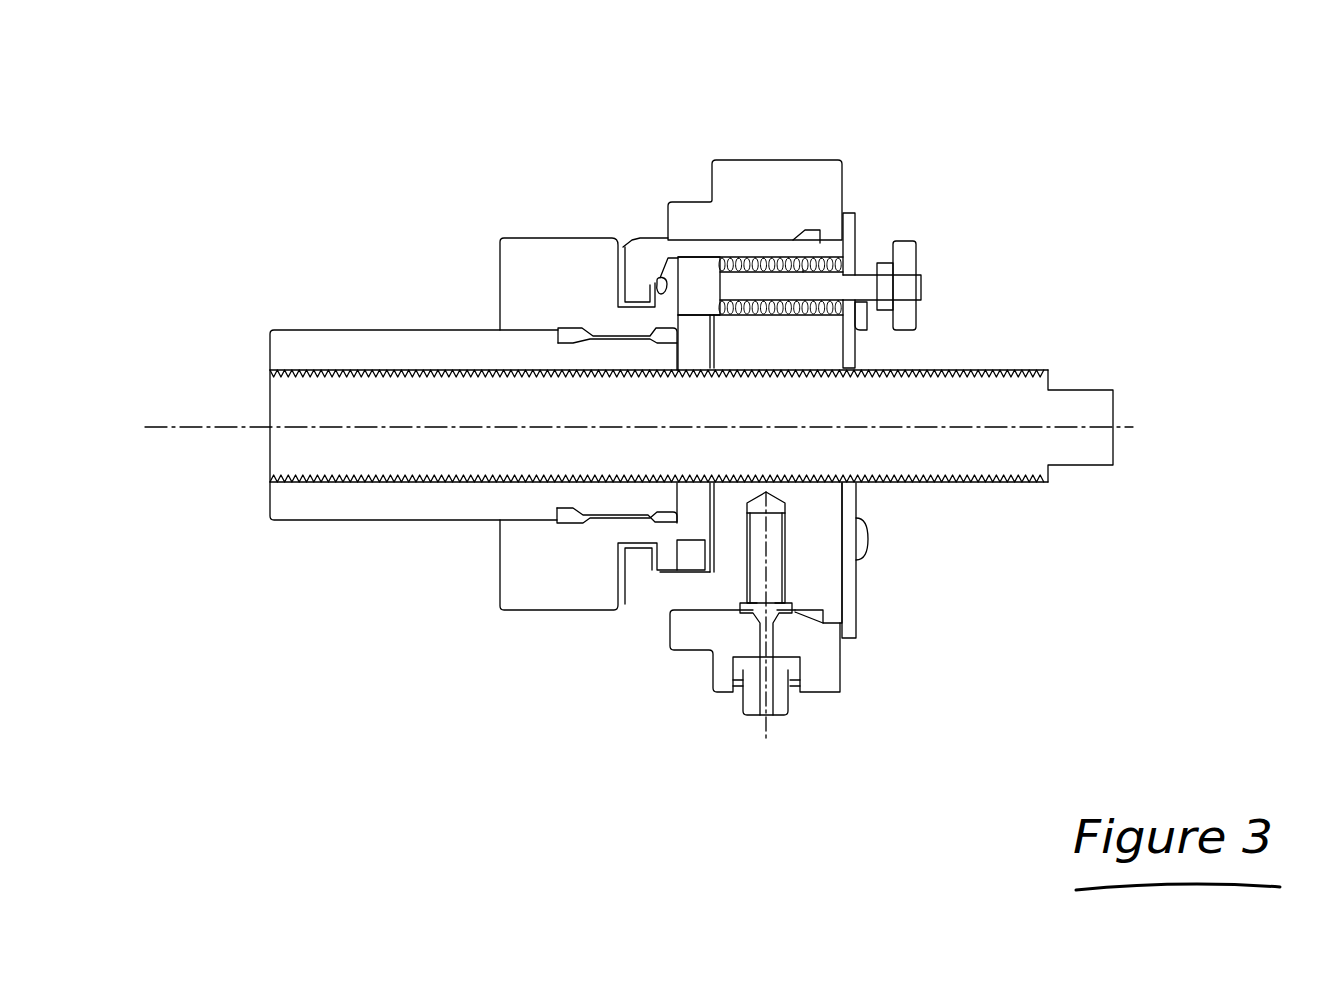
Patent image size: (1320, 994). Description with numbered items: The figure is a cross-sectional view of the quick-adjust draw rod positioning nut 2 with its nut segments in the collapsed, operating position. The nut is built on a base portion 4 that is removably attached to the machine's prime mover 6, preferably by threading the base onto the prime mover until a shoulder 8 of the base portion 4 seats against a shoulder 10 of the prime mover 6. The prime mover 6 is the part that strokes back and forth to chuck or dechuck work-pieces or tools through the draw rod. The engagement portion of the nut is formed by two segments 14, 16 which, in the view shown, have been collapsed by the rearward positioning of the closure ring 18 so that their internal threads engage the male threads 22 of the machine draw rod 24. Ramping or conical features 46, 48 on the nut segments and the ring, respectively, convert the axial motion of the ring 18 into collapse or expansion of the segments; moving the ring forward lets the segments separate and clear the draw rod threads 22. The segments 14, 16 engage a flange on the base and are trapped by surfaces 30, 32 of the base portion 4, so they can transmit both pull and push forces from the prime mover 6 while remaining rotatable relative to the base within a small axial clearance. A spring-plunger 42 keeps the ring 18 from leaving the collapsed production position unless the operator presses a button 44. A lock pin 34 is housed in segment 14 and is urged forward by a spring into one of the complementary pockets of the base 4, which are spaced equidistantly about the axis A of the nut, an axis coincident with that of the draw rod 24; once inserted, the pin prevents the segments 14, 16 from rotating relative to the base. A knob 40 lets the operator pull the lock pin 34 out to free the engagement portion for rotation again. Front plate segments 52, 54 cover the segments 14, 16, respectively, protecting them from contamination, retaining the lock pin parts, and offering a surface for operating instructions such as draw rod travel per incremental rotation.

The quick-adjust draw rod positioning nut 2 is at (880, 108).
The base portion 4 is at (517, 255).
The prime mover 6 is at (313, 350).
The shoulder 8 is at (678, 498).
The shoulder 10 is at (677, 493).
The segment 14 is at (827, 338).
The segment 16 is at (812, 571).
The closure ring 18 is at (766, 186).
The male threads 22 is at (1018, 487).
The machine draw rod 24 is at (1088, 403).
The surface of base portion 30 is at (661, 280).
The surface of base portion 32 is at (708, 334).
The lock pin 34 is at (864, 276).
The knob 40 is at (905, 265).
The spring-plunger 42 is at (770, 540).
The button 44 is at (781, 703).
The ramping or conical feature 46 is at (632, 242).
The ramping or conical feature 48 is at (803, 227).
The front plate segment 52 is at (847, 233).
The front plate segment 54 is at (850, 606).
The axis A is at (1130, 435).